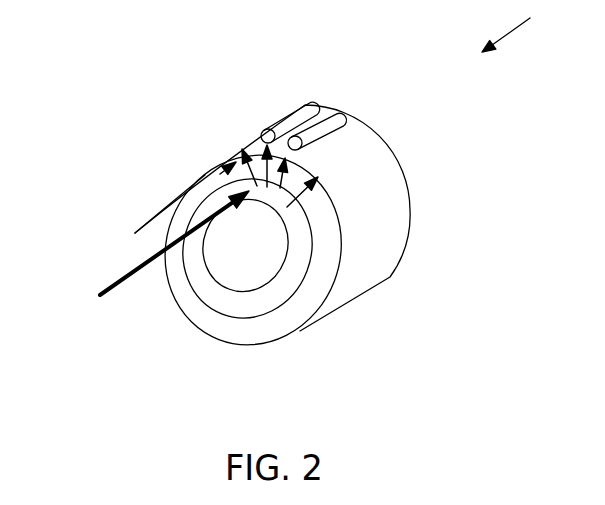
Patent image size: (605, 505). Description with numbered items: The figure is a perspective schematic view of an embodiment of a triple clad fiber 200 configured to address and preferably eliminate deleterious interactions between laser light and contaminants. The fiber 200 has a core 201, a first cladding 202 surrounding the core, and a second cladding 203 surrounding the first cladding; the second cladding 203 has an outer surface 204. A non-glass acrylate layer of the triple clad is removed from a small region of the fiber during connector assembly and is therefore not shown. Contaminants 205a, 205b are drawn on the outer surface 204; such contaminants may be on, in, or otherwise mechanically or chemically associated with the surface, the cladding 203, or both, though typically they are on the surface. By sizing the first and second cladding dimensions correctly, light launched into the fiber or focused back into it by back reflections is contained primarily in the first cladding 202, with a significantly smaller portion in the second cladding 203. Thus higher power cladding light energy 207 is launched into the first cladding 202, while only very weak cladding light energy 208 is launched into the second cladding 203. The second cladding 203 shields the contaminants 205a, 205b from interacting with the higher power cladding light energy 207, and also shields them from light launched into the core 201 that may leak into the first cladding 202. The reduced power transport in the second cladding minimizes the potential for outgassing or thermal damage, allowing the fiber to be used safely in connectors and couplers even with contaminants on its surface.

The triple clad fiber 200 is at (529, 29).
The core 201 is at (267, 240).
The first cladding 202 is at (289, 292).
The second cladding 203 is at (195, 283).
The outer surface 204 is at (363, 153).
The contaminant 205a is at (341, 115).
The contaminant 205b is at (293, 112).
The cladding light energy 207 is at (113, 285).
The very weak cladding light energy 208 is at (152, 221).